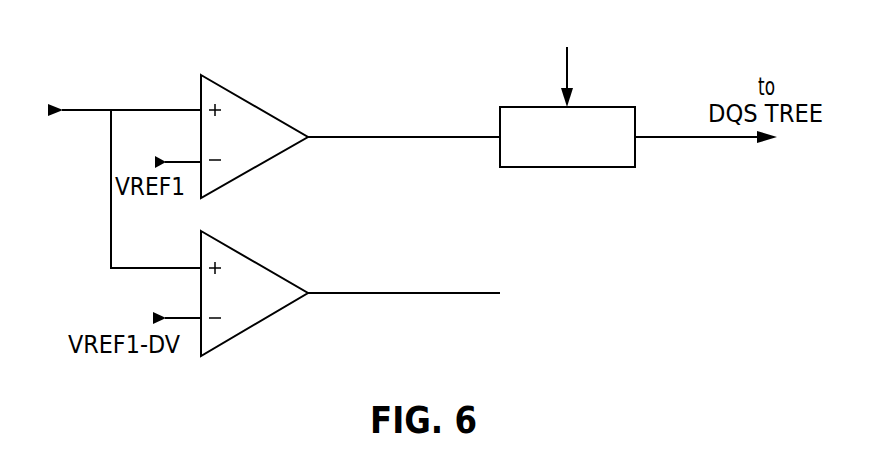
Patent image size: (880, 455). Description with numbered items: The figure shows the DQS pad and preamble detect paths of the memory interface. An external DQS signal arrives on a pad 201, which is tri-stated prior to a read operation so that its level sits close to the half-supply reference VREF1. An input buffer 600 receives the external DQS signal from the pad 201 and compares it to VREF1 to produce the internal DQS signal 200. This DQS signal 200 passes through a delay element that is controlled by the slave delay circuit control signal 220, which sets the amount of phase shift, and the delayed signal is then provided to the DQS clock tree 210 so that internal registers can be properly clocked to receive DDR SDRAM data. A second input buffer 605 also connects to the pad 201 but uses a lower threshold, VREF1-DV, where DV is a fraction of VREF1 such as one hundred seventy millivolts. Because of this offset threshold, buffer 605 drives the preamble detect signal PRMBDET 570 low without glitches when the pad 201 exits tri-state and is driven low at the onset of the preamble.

The pad 201 is at (58, 62).
The input buffer 600 is at (267, 111).
The input buffer 605 is at (277, 273).
The DQS signal 200 is at (435, 135).
The DQS clock tree 210 is at (618, 107).
The slave delay circuit control signal 220 is at (500, 25).
The preamble detect signal 570 is at (652, 280).